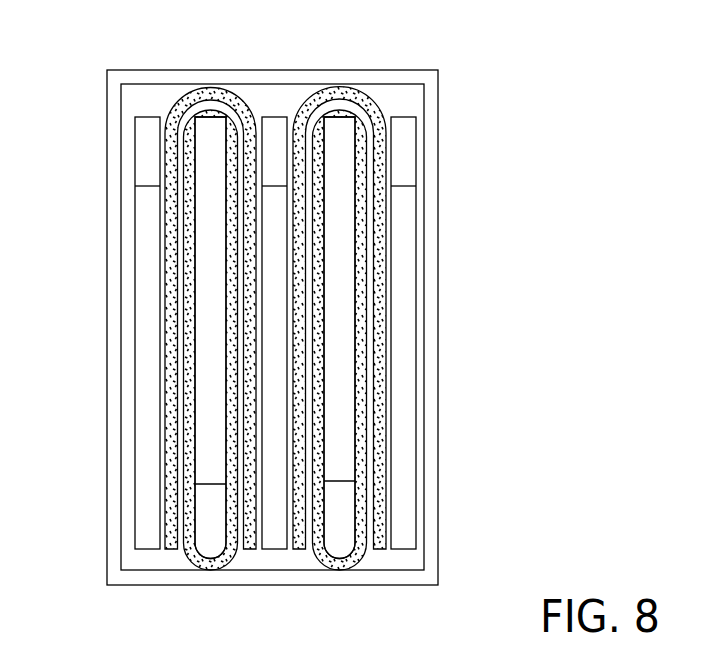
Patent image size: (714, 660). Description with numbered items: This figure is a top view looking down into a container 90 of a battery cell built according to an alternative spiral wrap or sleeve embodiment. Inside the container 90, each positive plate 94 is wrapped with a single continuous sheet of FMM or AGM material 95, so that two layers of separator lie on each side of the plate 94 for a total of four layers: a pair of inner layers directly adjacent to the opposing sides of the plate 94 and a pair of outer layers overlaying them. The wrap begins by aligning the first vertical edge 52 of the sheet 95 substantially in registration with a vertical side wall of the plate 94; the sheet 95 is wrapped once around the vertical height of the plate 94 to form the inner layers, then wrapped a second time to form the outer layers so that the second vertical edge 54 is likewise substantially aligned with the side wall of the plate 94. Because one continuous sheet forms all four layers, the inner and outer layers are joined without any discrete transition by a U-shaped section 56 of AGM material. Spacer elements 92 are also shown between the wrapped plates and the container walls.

The container 90 is at (287, 70).
The spacer/divider bars 92 is at (138, 203).
The positive plate 94 is at (207, 352).
The AGM material sheet 95 is at (282, 360).
The second vertical edge 54 is at (170, 549).
The U-shaped section 56 is at (196, 560).
The first vertical edge 52 is at (301, 376).